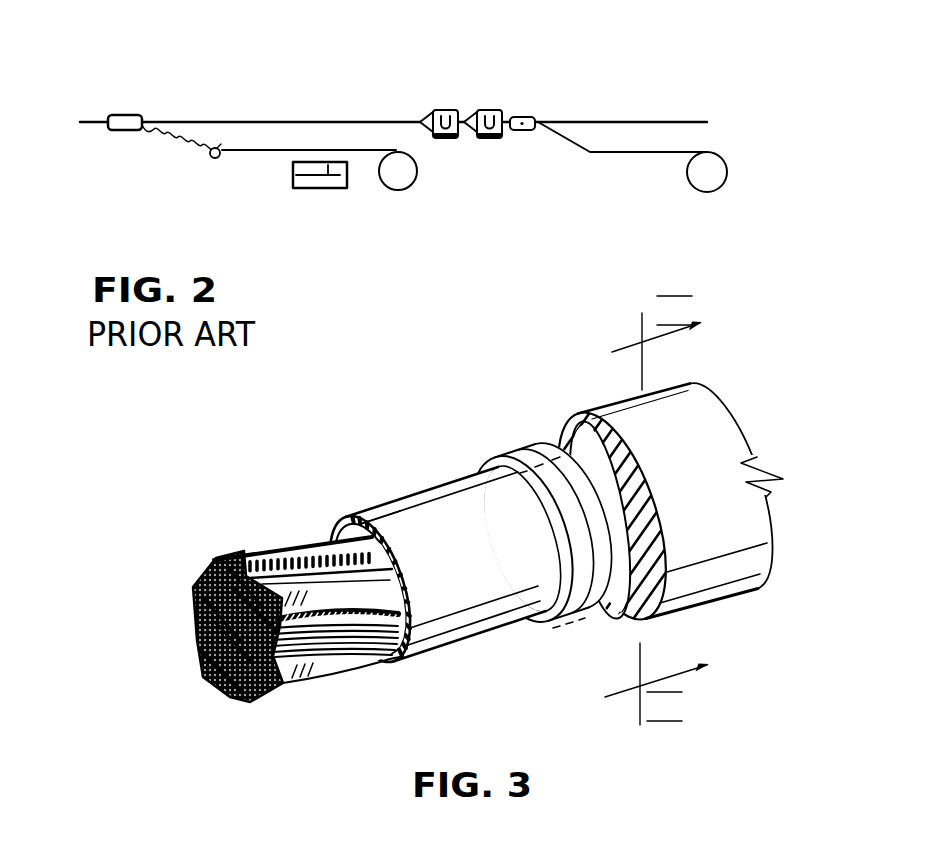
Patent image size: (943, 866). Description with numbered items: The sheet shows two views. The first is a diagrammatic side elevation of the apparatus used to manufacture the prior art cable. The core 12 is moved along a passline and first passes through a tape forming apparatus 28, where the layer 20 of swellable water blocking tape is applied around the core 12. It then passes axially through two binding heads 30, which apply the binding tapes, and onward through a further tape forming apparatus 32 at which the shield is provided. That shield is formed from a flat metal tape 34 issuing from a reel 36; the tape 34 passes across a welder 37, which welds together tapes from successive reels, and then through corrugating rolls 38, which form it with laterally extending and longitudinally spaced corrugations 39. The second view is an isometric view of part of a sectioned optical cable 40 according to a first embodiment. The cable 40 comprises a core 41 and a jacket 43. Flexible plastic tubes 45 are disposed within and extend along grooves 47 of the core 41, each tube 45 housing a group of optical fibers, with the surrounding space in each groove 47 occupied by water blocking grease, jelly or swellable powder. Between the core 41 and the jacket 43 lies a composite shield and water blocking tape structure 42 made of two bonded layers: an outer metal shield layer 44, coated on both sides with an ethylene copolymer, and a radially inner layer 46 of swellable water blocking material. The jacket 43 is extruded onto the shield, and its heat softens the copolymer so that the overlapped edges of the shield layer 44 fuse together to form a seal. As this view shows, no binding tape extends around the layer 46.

In FIG. 2, the core 12 is at (685, 120).
In FIG. 2, the layer of swellable water blocking tape 20 is at (642, 153).
In FIG. 2, the tape forming apparatus 28 is at (538, 122).
In FIG. 2, the binding heads 30 is at (488, 110).
In FIG. 2, the further tape forming apparatus 32 is at (136, 115).
In FIG. 2, the flat metal tape 34 is at (253, 153).
In FIG. 2, the reel 36 is at (403, 173).
In FIG. 2, the welder 37 is at (317, 188).
In FIG. 2, the corrugating rolls 38 is at (221, 147).
In FIG. 2, the corrugations 39 is at (178, 142).
In FIG. 3, the optical cable 40 is at (600, 330).
In FIG. 3, the core 41 is at (226, 527).
In FIG. 3, the composite shield and water blocking tape structure 42 is at (478, 430).
In FIG. 3, the jacket 43 is at (730, 450).
In FIG. 3, the outer metal shield layer 44 is at (520, 456).
In FIG. 3, the flexible plastic tubes 45 is at (325, 633).
In FIG. 3, the radially inner layer of swellable water blocking material 46 is at (428, 491).
In FIG. 3, the grooves 47 is at (302, 555).